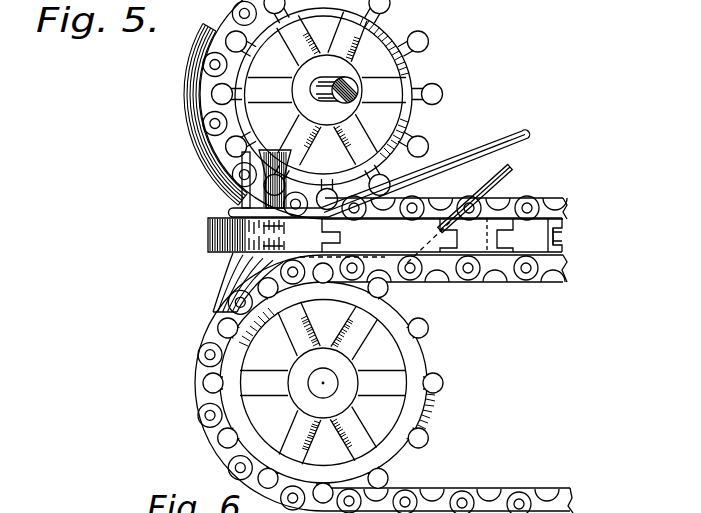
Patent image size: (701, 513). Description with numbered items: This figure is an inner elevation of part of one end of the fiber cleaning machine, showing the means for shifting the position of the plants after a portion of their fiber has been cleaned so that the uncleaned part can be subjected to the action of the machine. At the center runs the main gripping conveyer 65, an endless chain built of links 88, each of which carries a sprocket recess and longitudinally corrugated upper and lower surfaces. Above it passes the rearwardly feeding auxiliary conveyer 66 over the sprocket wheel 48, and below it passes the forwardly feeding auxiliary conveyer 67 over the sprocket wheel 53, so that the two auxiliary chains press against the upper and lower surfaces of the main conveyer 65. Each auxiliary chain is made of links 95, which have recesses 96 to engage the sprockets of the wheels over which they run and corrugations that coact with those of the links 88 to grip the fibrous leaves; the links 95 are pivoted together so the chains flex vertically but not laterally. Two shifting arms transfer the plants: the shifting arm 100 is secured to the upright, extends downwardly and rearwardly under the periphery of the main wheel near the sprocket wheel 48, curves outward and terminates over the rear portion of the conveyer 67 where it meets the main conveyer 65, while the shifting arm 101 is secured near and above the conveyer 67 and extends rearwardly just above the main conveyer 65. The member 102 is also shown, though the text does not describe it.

The sprocket wheel 48 is at (440, 92).
The sprocket wheel 53 is at (438, 414).
The main gripping conveyer 65 is at (565, 238).
The rearwardly feeding auxiliary conveyer 66 is at (217, 163).
The forwardly feeding auxiliary conveyer 67 is at (568, 278).
The link 88 is at (385, 237).
The link 95 is at (541, 207).
The recess 96 is at (437, 200).
The shifting arm 100 is at (520, 160).
The shifting arm 101 is at (446, 162).
The guide strip 102 is at (240, 197).